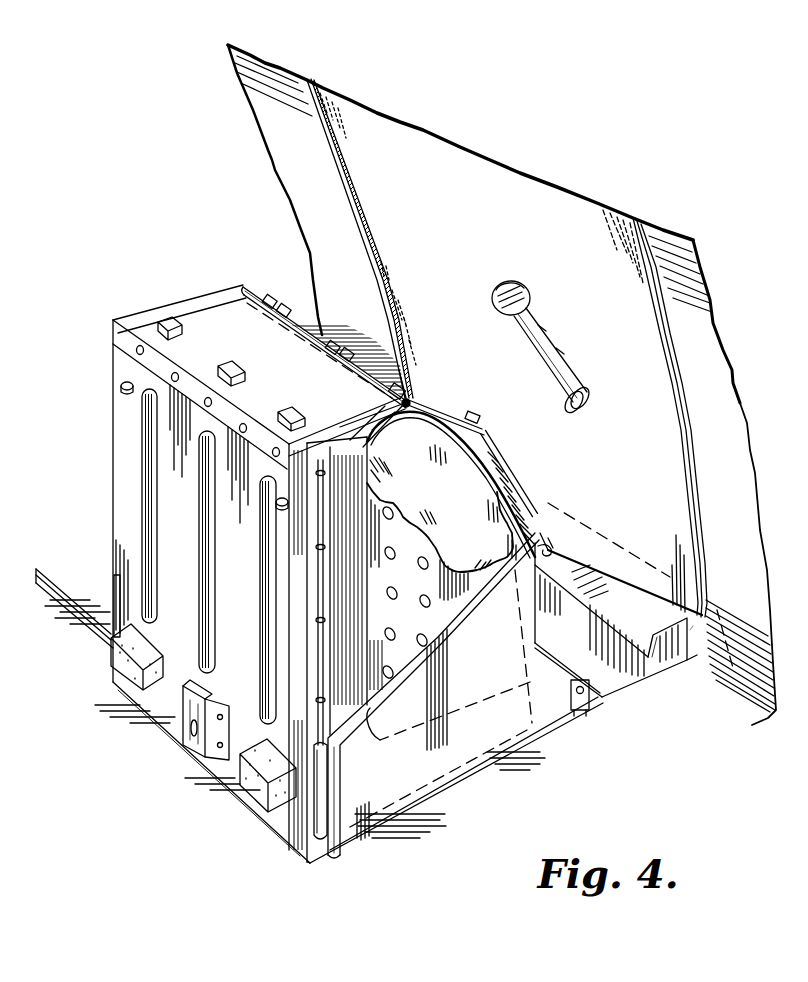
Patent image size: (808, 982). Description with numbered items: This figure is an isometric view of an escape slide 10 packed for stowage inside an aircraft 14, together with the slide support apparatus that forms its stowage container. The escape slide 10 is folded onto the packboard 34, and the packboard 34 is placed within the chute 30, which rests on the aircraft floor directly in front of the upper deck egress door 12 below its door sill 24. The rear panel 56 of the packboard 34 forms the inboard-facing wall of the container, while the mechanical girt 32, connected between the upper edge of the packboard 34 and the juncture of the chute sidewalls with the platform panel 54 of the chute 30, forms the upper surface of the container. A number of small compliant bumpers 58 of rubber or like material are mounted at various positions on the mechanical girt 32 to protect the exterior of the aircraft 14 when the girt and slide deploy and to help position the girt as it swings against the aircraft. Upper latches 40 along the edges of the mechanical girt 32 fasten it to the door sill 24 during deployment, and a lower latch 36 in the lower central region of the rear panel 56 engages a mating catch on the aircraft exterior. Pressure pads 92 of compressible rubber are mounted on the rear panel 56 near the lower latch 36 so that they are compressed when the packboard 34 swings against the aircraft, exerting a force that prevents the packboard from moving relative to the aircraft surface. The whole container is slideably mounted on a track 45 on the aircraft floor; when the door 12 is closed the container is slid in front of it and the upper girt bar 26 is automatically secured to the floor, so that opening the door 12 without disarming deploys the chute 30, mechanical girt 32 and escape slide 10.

The escape slide 10 is at (455, 502).
The upper deck egress door 12 is at (518, 174).
The aircraft 14 is at (716, 262).
The door sill 24 is at (684, 632).
The upper girt bar 26 is at (590, 694).
The chute 30 is at (474, 750).
The mechanical girt 32 is at (437, 404).
The packboard 34 is at (340, 628).
The lower latch 36 is at (197, 749).
The upper latch 40 is at (552, 548).
The track 45 is at (46, 569).
The platform panel 54 is at (543, 624).
The rear panel 56 is at (113, 461).
The compliant bumpers 58 is at (167, 320).
The pressure pads 92 is at (122, 659).